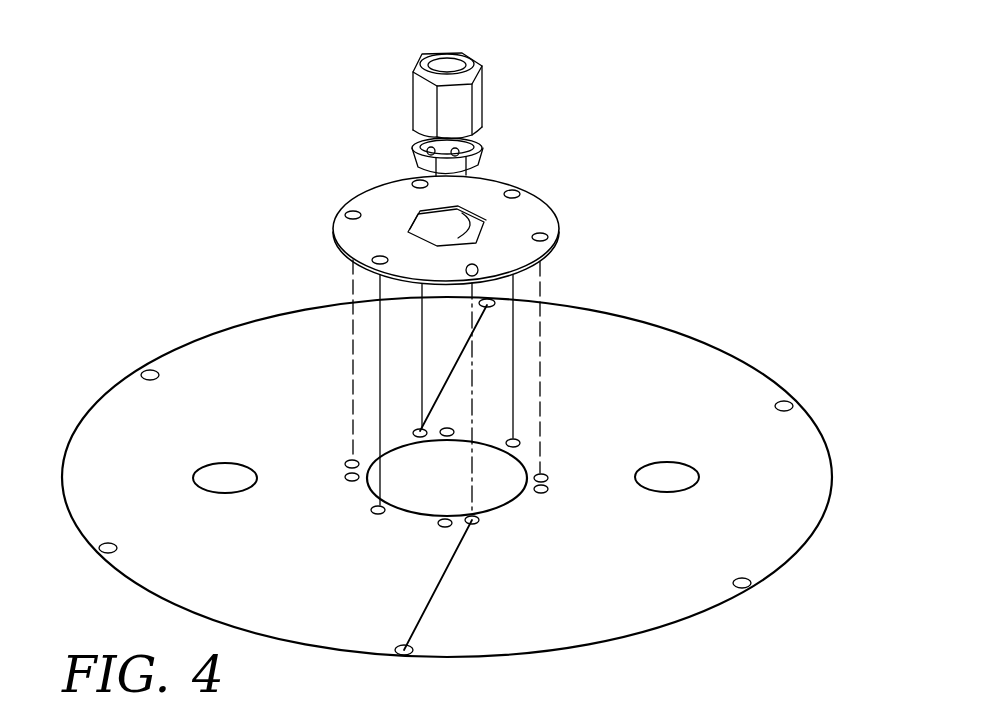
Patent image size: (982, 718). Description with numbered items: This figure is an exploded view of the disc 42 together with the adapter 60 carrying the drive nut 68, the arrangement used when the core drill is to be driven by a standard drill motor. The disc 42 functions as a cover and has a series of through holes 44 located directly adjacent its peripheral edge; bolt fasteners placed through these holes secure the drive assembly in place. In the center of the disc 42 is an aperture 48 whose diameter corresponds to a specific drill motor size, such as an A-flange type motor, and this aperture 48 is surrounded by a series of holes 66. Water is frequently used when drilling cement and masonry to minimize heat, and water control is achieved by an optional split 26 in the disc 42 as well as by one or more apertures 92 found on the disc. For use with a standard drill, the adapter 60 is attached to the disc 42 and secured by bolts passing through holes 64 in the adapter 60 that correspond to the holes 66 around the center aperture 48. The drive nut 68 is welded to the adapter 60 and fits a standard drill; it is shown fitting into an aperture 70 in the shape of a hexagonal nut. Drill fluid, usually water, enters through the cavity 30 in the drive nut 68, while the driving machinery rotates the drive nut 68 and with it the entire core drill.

The split 26 is at (428, 622).
The cavity 30 is at (449, 72).
The disc 42 is at (716, 343).
The through holes 44 is at (784, 402).
The aperture 48 is at (425, 510).
The adapter 60 is at (352, 199).
The holes 64 is at (540, 235).
The holes 66 is at (420, 432).
The drive nut 68 is at (410, 98).
The aperture 70 is at (462, 236).
The apertures 92 is at (225, 463).